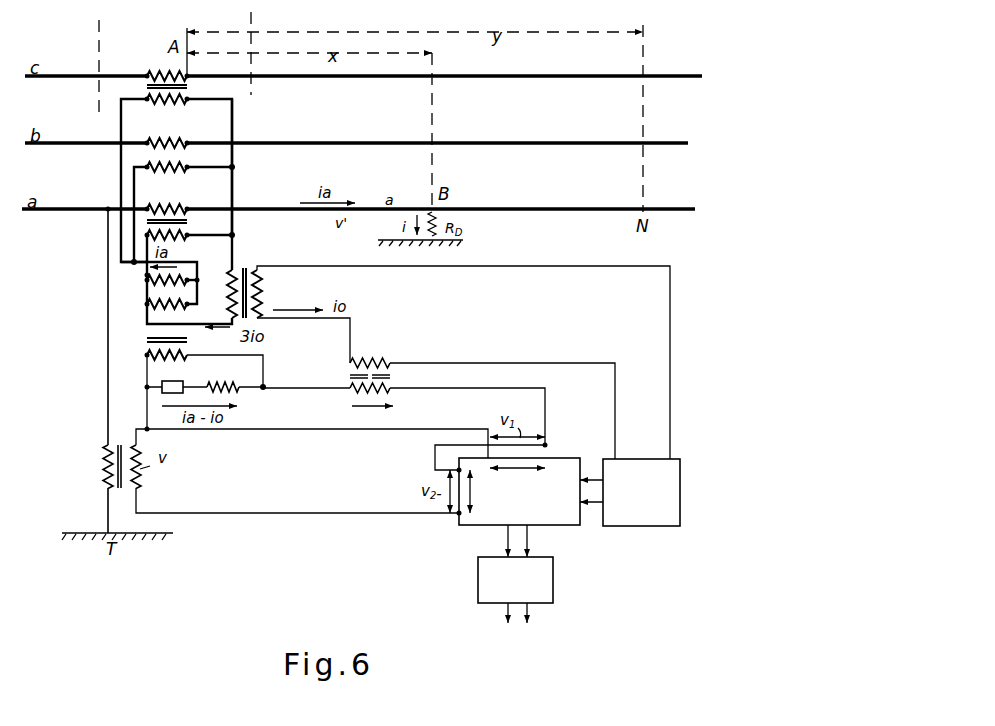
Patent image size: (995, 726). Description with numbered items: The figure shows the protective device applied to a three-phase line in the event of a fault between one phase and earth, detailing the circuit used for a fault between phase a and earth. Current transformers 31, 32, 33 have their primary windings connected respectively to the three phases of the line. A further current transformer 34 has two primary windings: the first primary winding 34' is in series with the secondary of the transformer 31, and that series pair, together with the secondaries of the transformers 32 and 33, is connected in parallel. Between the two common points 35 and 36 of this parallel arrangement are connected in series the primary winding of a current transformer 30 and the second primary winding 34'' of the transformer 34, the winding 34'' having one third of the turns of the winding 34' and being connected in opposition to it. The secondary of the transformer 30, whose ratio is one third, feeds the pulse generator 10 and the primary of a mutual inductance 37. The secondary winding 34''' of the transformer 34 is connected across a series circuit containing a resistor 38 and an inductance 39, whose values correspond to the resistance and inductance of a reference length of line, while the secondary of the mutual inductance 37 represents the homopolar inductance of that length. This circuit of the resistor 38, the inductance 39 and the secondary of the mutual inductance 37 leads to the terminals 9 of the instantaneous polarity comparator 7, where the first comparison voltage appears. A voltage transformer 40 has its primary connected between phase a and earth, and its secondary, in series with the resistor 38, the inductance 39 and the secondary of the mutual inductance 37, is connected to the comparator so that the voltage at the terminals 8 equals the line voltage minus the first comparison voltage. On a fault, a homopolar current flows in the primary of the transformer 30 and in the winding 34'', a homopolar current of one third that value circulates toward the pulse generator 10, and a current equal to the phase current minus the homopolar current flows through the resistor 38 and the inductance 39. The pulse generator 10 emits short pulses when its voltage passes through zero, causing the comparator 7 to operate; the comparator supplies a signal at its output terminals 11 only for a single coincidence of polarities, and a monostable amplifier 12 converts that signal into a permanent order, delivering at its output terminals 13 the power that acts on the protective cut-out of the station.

The instantaneous polarity comparator 7 is at (542, 508).
The terminals of the comparator 8 is at (476, 494).
The terminals of the comparator 9 is at (517, 477).
The pulse generator 10 is at (650, 506).
The output terminals of the comparator 11 is at (505, 540).
The monostable amplifier 12 is at (523, 589).
The output terminals of the monostable amplifier 13 is at (517, 626).
The current transformer 30 is at (228, 293).
The current transformer 31 is at (193, 238).
The current transformer 32 is at (176, 174).
The current transformer 33 is at (176, 106).
The current transformer 34 is at (128, 350).
The first primary winding of transformer 34 34' is at (129, 290).
The second primary winding of transformer 34 34'' is at (127, 315).
The secondary winding of transformer 34 34''' is at (126, 371).
The common point 35 is at (234, 169).
The common point 36 is at (131, 263).
The mutual inductance 37 is at (348, 378).
The resistor 38 is at (175, 380).
The inductance 39 is at (212, 380).
The voltage transformer 40 is at (120, 438).